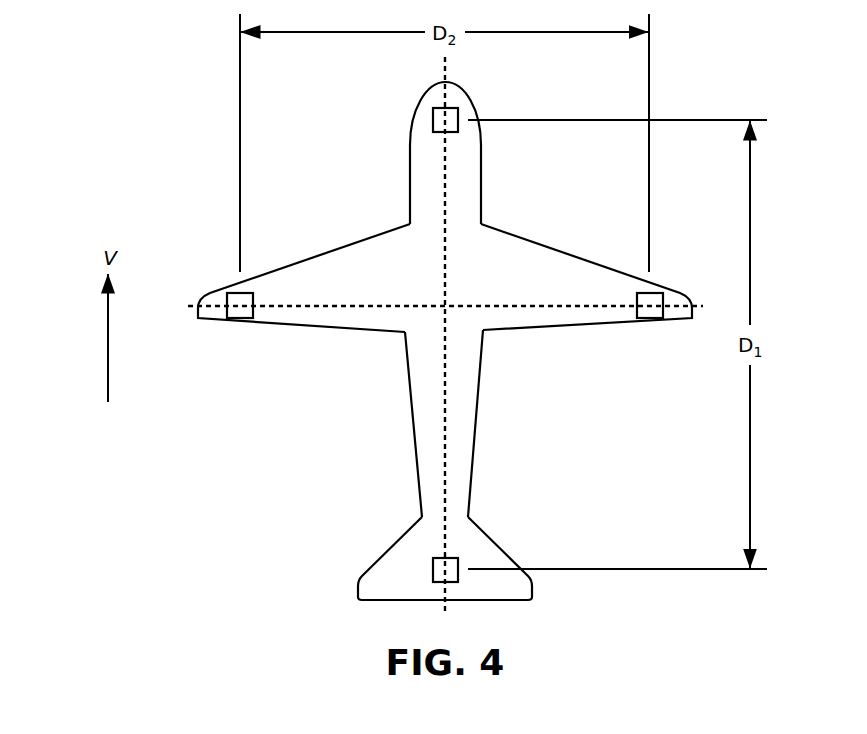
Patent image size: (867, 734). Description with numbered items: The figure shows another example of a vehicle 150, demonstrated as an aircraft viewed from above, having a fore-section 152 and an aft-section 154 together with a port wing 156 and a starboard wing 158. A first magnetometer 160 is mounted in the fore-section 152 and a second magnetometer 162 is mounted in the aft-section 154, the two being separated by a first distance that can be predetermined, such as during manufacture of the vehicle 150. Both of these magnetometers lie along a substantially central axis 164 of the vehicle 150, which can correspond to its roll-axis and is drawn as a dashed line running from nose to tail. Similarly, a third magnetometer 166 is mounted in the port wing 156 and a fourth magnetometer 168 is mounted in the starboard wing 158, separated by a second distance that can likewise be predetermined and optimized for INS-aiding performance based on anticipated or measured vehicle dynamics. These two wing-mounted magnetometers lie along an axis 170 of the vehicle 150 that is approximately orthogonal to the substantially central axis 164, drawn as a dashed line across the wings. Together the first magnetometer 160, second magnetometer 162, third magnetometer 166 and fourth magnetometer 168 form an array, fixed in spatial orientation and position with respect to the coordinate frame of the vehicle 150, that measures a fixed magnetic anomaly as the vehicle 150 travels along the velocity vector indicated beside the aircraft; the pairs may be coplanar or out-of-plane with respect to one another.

The vehicle 150 is at (121, 60).
The fore-section 152 is at (476, 90).
The aft-section 154 is at (346, 568).
The port wing 156 is at (235, 263).
The starboard wing 158 is at (656, 268).
The first magnetometer 160 is at (433, 116).
The second magnetometer 162 is at (434, 560).
The substantially central axis 164 is at (444, 282).
The third magnetometer 166 is at (237, 319).
The fourth magnetometer 168 is at (650, 319).
The axis 170 is at (543, 304).